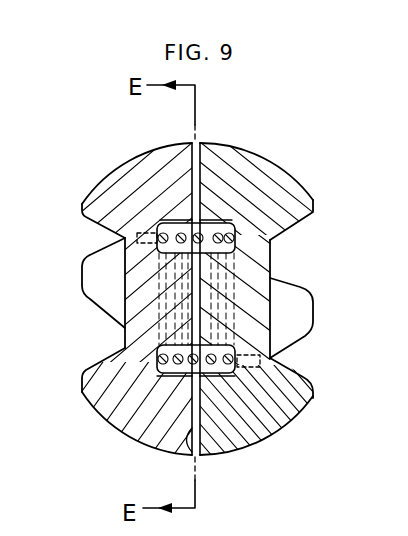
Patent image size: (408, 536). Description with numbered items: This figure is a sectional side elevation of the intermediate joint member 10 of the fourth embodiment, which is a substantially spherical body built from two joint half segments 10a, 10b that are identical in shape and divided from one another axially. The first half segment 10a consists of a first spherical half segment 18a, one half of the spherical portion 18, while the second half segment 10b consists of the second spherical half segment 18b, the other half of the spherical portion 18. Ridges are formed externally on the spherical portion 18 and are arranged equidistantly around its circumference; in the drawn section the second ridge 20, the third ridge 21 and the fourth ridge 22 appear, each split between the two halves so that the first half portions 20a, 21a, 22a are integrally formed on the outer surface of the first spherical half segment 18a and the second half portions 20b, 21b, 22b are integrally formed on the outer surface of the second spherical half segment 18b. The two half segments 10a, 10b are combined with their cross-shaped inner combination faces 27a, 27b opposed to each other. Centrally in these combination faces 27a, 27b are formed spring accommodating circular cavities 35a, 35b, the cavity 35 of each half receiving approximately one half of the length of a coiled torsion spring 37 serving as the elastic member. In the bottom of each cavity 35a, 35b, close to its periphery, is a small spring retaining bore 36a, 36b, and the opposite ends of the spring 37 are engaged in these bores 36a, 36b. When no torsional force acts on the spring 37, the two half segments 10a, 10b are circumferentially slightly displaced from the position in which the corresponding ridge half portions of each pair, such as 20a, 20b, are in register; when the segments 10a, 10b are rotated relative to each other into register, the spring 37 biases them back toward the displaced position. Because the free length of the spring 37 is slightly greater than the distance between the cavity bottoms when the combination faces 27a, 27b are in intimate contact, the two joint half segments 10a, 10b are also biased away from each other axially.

The intermediate joint member 10 is at (197, 289).
The first joint half segment 10a is at (141, 446).
The second joint half segment 10b is at (236, 450).
The spherical portion 18 is at (126, 346).
The first spherical half segment 18a is at (125, 330).
The second spherical half segment 18b is at (266, 258).
The second ridge 20 is at (211, 293).
The first half portion of second ridge 20a is at (80, 274).
The second half portion of second ridge 20b is at (315, 317).
The third ridge 21 is at (112, 170).
The first half portion of third ridge 21a is at (88, 192).
The second half portion of third ridge 21b is at (295, 180).
The fourth ridge 22 is at (164, 455).
The first half portion of fourth ridge 22a is at (93, 408).
The second half portion of fourth ridge 22b is at (300, 409).
The combination face of first half segment 27a is at (201, 160).
The combination face of second half segment 27b is at (198, 456).
The spring accommodating circular cavity 35 is at (282, 340).
The spring accommodating circular cavity of first segment 35a is at (118, 431).
The spring accommodating circular cavity of second segment 35b is at (285, 424).
The spring retaining bore of first segment 36a is at (147, 233).
The spring retaining bore of second segment 36b is at (247, 367).
The coiled torsion spring 37 is at (206, 227).